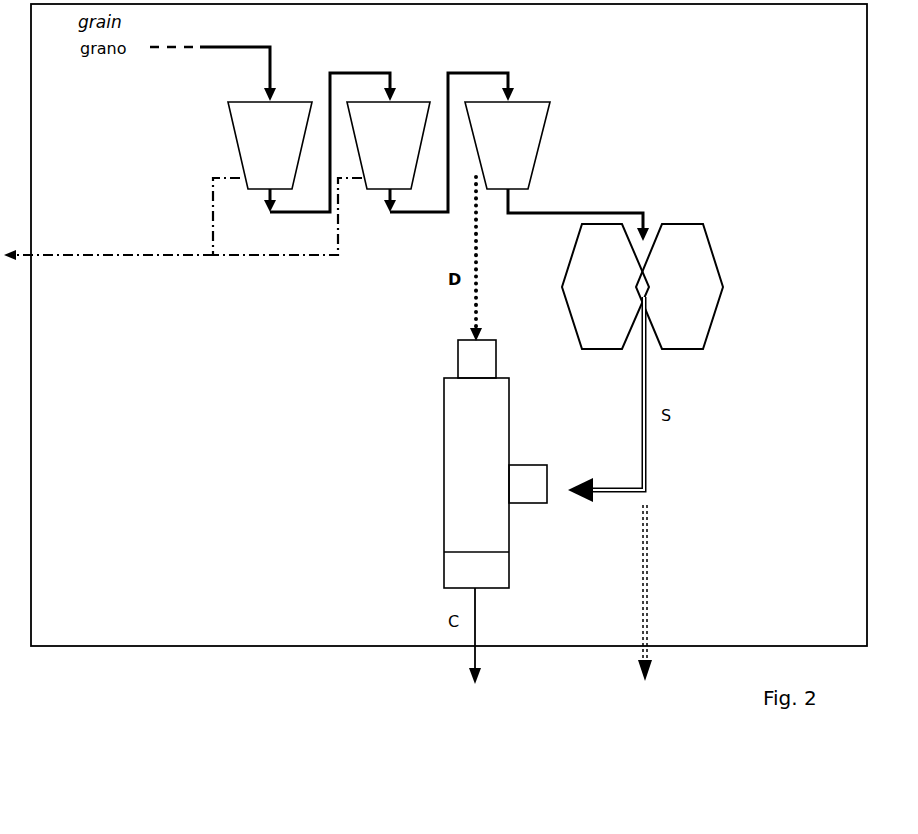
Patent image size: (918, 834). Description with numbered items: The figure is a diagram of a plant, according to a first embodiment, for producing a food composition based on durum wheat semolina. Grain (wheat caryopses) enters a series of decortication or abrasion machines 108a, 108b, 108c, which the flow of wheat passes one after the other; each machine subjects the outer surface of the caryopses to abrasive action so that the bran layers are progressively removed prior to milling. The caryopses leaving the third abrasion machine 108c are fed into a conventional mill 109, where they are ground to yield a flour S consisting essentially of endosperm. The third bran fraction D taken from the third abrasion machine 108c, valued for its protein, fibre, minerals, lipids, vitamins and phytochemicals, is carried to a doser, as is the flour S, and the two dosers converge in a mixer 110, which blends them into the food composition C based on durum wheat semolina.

The decortication or abrasion machine 108a is at (240, 152).
The decortication or abrasion machine 108b is at (410, 102).
The decortication or abrasion machine 108c is at (535, 102).
The mill 109 is at (725, 293).
The mixer 110 is at (444, 491).